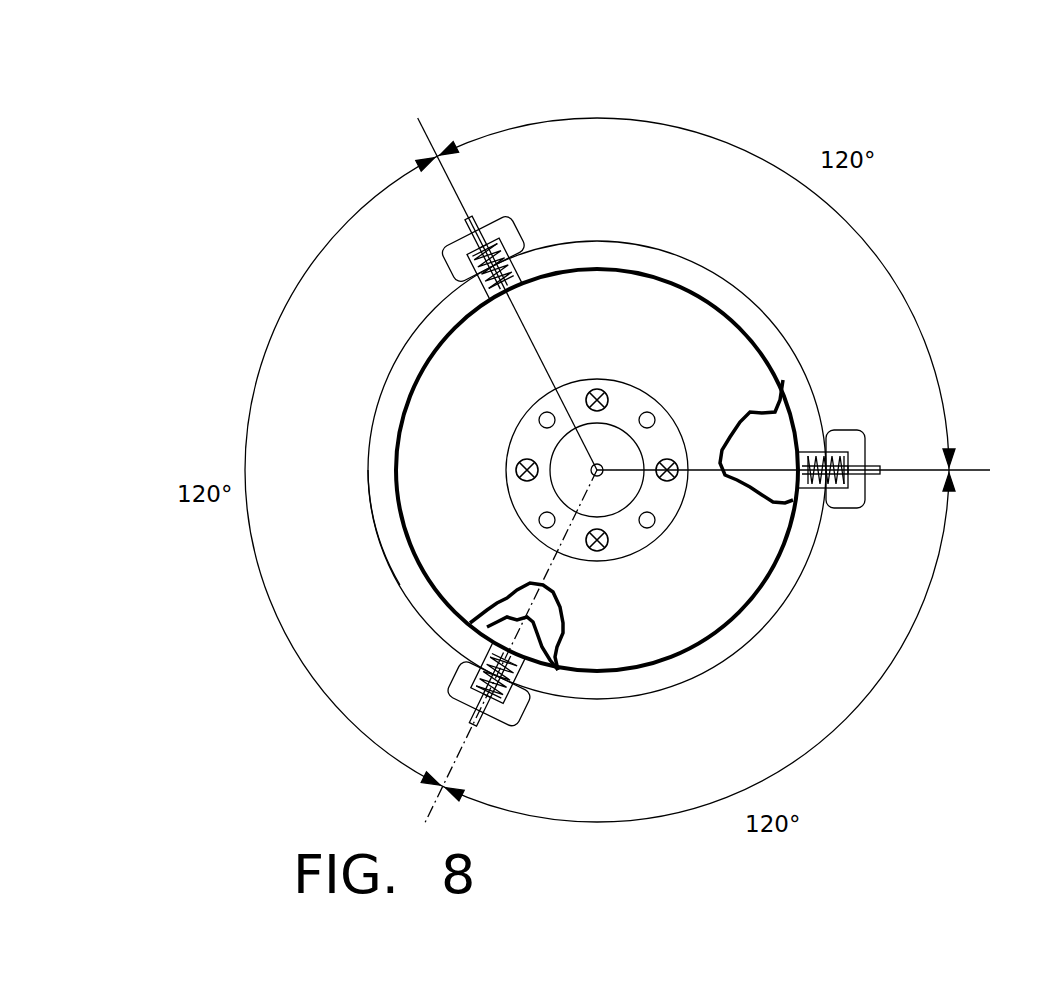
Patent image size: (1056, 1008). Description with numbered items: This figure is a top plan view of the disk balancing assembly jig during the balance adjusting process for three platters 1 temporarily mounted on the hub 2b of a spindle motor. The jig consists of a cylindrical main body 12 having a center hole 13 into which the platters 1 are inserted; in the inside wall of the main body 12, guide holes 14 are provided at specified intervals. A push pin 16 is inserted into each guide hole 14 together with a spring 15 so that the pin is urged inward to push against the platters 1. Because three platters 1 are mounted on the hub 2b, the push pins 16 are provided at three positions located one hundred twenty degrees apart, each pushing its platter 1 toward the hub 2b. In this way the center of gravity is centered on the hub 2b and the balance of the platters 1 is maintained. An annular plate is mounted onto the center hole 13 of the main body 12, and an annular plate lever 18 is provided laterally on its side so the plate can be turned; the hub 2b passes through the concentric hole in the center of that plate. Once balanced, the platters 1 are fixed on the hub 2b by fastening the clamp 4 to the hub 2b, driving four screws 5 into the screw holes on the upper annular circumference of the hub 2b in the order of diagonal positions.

The platter 1 is at (583, 637).
The hub 2b is at (622, 495).
The clamp 4 is at (668, 505).
The screw 5 is at (515, 472).
The main body 12 is at (383, 530).
The center hole 13 is at (697, 290).
The annular plate lever 18 is at (585, 272).
The guide hole 14 is at (466, 219).
The spring 15 is at (525, 250).
The push pin 16 is at (457, 295).